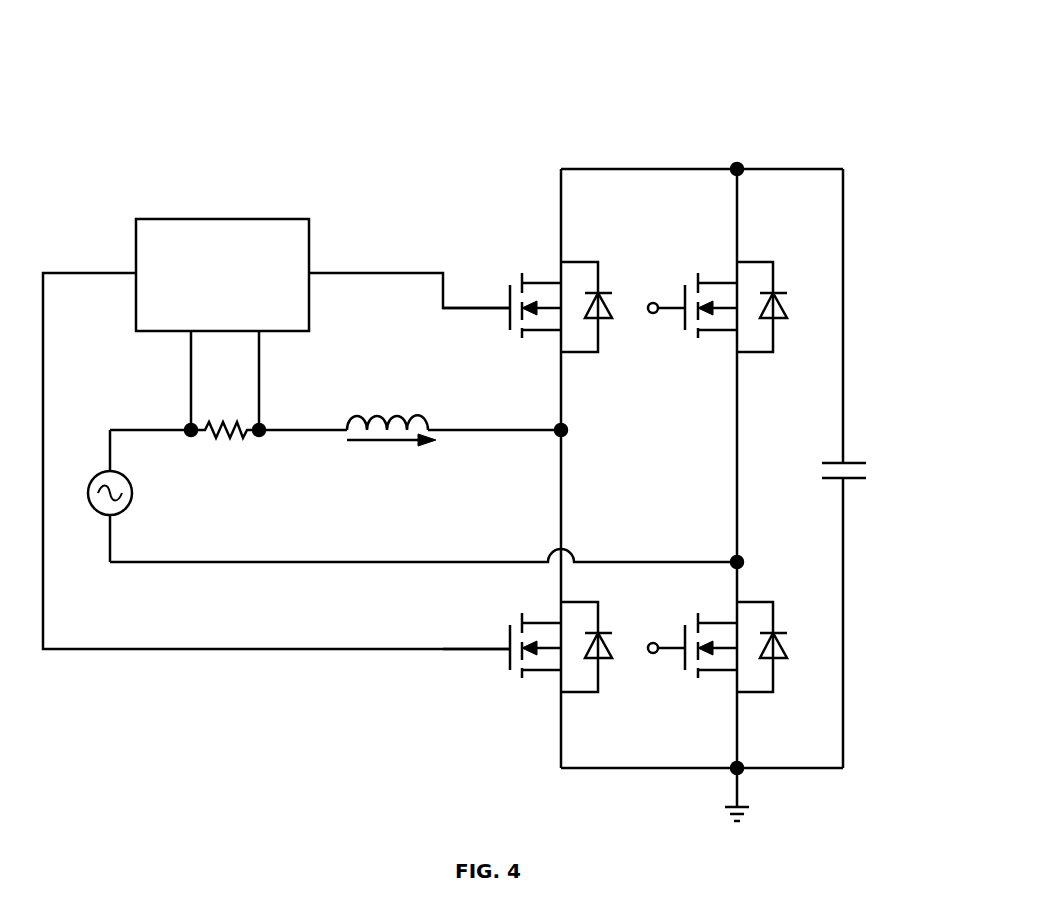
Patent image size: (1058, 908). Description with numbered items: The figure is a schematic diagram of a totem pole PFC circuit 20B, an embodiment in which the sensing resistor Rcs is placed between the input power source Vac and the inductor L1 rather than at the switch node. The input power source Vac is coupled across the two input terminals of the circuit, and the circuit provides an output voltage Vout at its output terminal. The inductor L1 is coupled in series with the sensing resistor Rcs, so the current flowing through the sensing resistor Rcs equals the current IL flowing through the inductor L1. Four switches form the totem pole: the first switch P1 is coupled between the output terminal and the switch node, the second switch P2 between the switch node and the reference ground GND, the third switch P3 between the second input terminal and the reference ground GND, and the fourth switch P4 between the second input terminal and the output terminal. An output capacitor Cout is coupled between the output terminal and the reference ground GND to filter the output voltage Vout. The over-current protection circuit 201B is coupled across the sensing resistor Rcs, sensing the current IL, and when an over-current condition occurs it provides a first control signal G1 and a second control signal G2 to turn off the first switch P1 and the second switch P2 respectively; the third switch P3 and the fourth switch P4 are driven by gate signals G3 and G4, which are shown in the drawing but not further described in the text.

The totem pole PFC circuit 20B is at (797, 91).
The over-current protection circuit 201B is at (207, 219).
The first switch P1 is at (561, 293).
The second switch P2 is at (561, 664).
The third switch P3 is at (736, 664).
The fourth switch P4 is at (736, 293).
The first control signal G1 is at (476, 294).
The second control signal G2 is at (476, 636).
The third gate signal G3 is at (665, 636).
The fourth gate signal G4 is at (665, 295).
The inductor L1 is at (387, 409).
The current IL is at (391, 453).
The sensing resistor Rcs is at (187, 444).
The input power source Vac is at (97, 496).
The output voltage Vout is at (804, 159).
The output capacitor Cout is at (862, 468).
The reference ground GND is at (765, 792).